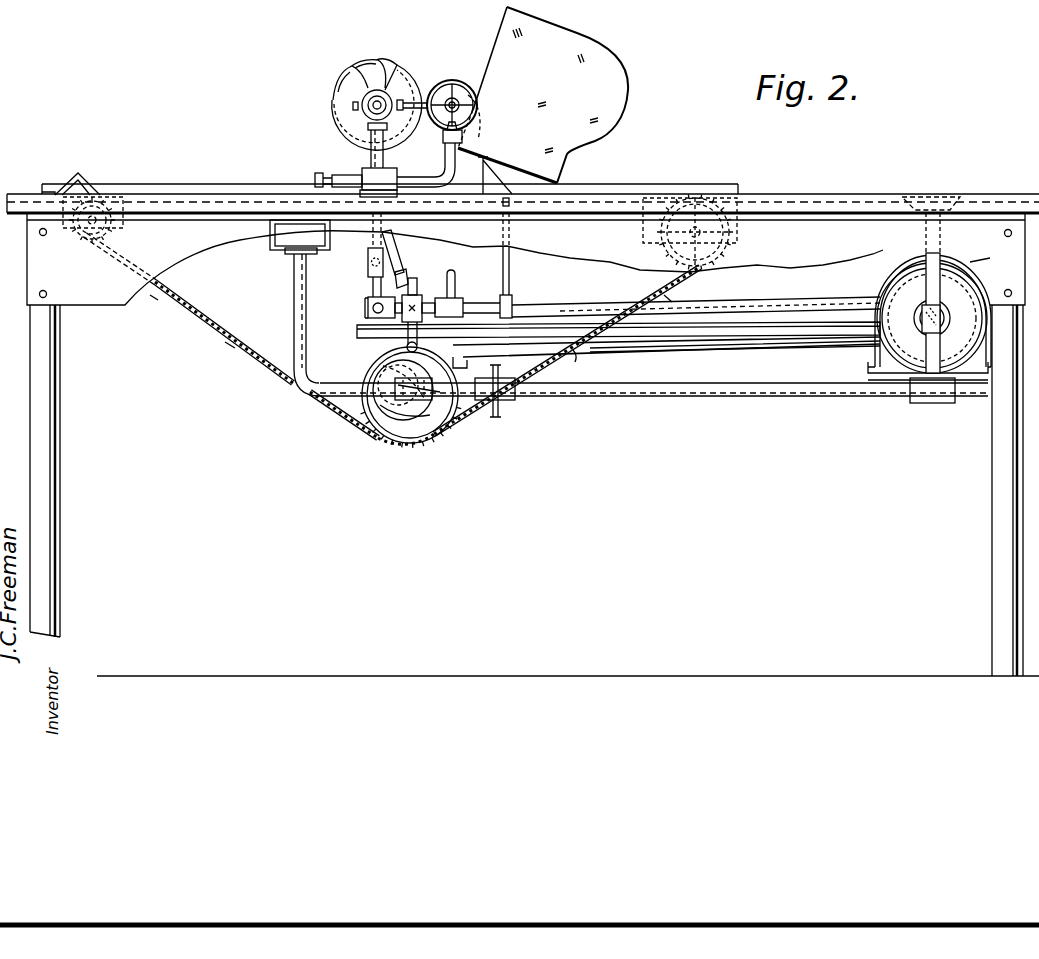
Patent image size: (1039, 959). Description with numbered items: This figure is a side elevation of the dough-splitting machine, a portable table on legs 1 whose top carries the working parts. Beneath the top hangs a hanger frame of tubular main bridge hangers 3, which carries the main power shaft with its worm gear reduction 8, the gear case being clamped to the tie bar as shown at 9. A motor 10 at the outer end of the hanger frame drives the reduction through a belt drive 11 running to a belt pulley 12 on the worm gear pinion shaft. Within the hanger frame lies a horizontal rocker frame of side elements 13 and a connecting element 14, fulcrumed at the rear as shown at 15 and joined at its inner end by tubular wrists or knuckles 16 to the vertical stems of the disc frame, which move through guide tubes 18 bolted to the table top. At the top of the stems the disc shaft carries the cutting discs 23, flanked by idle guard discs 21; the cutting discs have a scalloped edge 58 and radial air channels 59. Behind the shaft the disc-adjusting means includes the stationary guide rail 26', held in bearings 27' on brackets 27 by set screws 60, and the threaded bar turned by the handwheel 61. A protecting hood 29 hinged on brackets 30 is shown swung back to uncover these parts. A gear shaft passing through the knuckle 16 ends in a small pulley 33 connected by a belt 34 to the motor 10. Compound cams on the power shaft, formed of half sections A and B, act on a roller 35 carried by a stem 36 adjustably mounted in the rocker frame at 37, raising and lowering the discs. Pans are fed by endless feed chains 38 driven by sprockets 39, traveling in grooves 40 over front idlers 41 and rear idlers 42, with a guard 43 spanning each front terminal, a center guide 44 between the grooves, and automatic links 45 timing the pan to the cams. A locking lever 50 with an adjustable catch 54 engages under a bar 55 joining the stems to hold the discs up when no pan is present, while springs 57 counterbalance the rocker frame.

The legs 1 is at (59, 471).
The main bridge hangers 3 is at (763, 397).
The worm gear reduction 8 is at (463, 418).
The gear case clamp 9 is at (515, 406).
The motor 10 is at (883, 281).
The belt drive 11 is at (512, 354).
The belt pulley 12 is at (377, 357).
The side elements 13 is at (570, 305).
The connecting element 14 is at (457, 278).
The rocker frame fulcrum 15 is at (941, 292).
The tubular wrists or knuckles 16 is at (373, 302).
The guide tubes 18 is at (365, 168).
The idle guard disc 21 is at (332, 113).
The cutting discs 23 is at (368, 67).
The stationary guide rail 26' is at (489, 118).
The brackets 27 is at (426, 165).
The bearings 27' is at (436, 135).
The protecting hood 29 is at (621, 80).
The brackets 30 is at (492, 176).
The small pulley 33 is at (363, 325).
The belt 34 is at (667, 348).
The roller 35 is at (377, 347).
The stem 36 is at (413, 277).
The roller stem mounting 37 is at (415, 303).
The endless feed chains 38 is at (203, 320).
The driving sprockets 39 is at (350, 418).
The grooves or guides 40 is at (188, 214).
The stationary idlers 41 is at (80, 237).
The stationary idlers 42 is at (737, 247).
The guard or housing 43 is at (72, 174).
The center guide 44 is at (263, 183).
The automatic links 45 is at (233, 350).
The lever 50 is at (395, 250).
The adjustable catch 54 is at (370, 270).
The bar 55 is at (368, 255).
The springs 57 is at (512, 275).
The scalloped edge 58 is at (380, 63).
The air channels 59 is at (347, 76).
The set screws 60 is at (493, 172).
The handwheel 61 is at (452, 82).
The cam section A is at (422, 423).
The cam section B is at (397, 423).